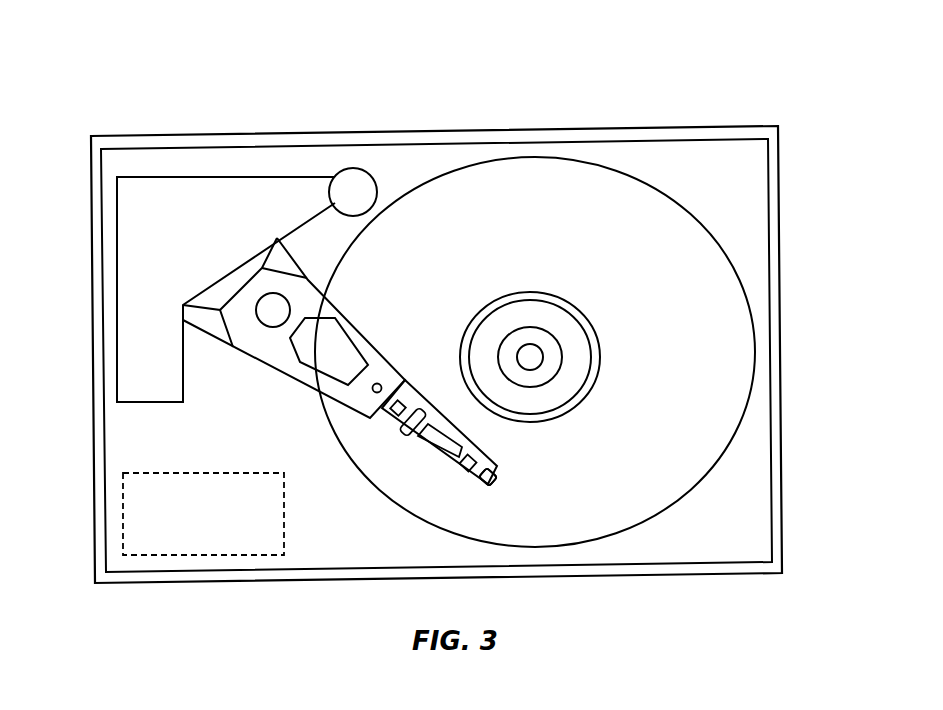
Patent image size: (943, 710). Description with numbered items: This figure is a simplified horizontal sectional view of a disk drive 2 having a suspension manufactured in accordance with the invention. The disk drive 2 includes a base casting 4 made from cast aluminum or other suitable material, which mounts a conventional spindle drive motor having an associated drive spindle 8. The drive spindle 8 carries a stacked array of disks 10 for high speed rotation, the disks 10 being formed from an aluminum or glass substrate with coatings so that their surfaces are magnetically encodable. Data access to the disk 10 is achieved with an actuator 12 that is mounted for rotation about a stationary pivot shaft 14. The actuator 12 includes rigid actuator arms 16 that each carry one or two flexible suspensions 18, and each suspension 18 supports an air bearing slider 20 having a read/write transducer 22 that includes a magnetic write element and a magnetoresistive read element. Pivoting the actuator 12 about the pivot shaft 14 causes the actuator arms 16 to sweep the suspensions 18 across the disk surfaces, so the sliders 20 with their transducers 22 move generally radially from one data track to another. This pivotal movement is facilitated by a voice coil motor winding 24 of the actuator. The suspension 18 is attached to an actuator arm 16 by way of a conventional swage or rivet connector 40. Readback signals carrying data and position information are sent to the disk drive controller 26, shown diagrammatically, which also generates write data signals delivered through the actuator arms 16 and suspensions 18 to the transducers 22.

The disk drive 2 is at (93, 44).
The base casting 4 is at (236, 135).
The drive spindle 8 is at (537, 361).
The disks 10 is at (551, 237).
The actuator 12 is at (260, 350).
The pivot shaft 14 is at (265, 293).
The actuator arms 16 is at (317, 383).
The suspensions 18 is at (371, 417).
The air bearing slider 20 is at (507, 460).
The read/write transducer 22 is at (500, 481).
The voice coil motor winding 24 is at (285, 255).
The disk drive controller 26 is at (285, 551).
The swage or rivet connector 40 is at (378, 383).